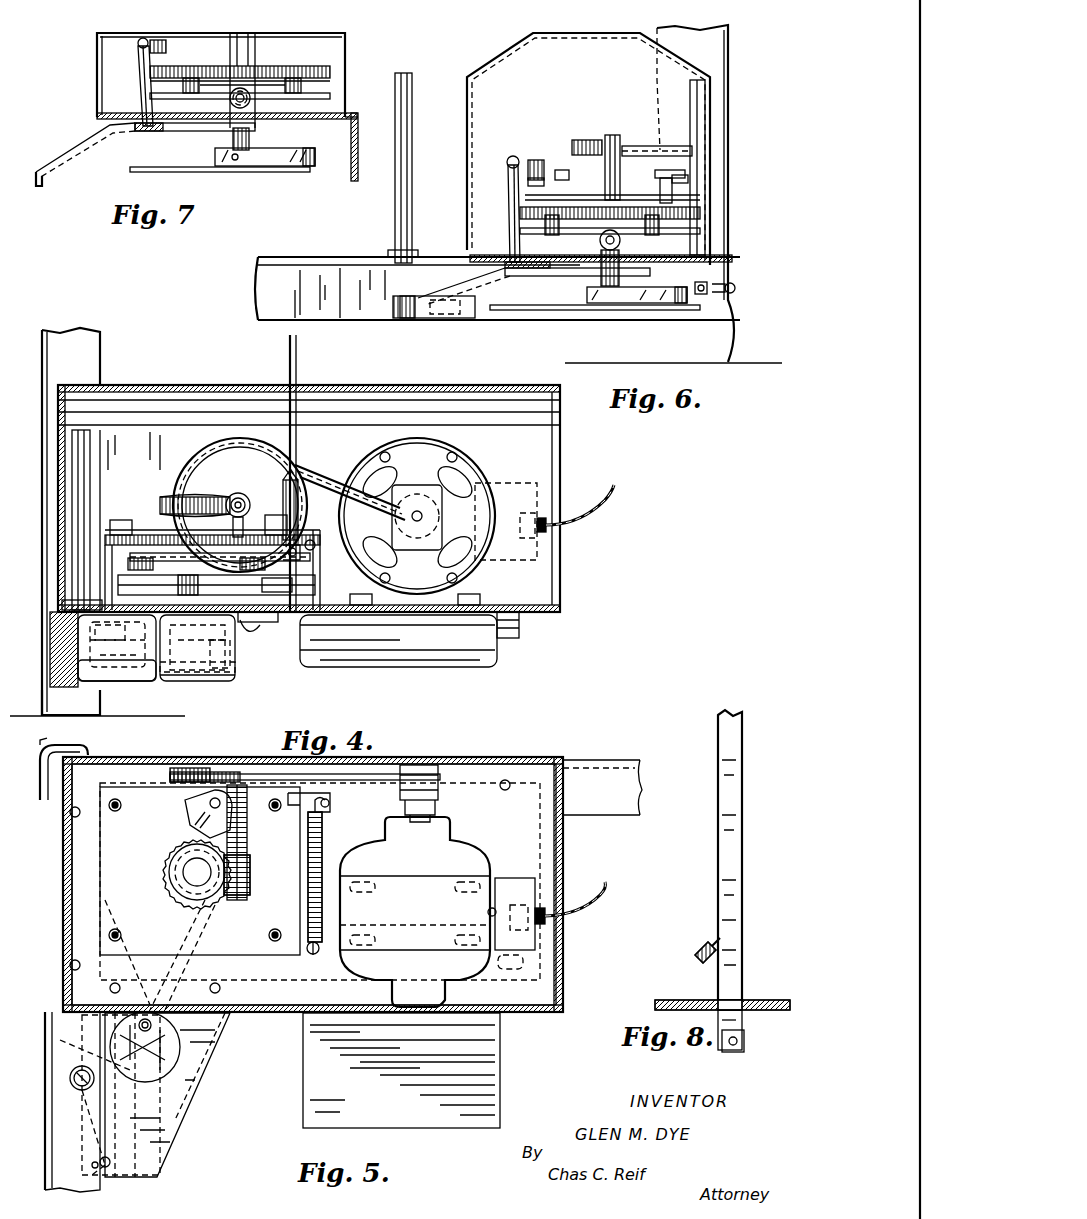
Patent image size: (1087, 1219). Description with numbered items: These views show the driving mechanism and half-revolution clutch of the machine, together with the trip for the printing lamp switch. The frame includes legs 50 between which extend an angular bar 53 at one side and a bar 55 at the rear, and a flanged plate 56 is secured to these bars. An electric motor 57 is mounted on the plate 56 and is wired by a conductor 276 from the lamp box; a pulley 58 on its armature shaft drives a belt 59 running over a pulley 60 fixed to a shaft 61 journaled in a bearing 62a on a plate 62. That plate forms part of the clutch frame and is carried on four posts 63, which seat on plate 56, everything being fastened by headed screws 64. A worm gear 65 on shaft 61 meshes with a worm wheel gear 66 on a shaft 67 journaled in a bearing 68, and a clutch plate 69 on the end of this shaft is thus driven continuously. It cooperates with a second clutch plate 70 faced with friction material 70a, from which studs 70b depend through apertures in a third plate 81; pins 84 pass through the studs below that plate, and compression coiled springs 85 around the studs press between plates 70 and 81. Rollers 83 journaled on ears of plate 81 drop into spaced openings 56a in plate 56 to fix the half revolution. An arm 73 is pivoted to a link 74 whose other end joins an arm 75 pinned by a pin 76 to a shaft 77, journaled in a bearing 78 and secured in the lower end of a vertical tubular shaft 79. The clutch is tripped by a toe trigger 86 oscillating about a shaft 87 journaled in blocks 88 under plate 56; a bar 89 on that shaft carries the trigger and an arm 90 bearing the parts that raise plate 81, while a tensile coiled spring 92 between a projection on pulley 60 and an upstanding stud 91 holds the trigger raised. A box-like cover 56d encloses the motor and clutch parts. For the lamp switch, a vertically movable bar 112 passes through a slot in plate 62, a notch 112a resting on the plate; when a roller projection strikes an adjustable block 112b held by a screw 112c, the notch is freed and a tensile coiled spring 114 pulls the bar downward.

In FIG. 6, the legs 50 is at (715, 50).
In FIG. 4, the legs 50 is at (98, 348).
In FIG. 5, the legs 50 is at (84, 752).
In FIG. 7, the bar 53 is at (355, 160).
In FIG. 6, the bar 53 is at (720, 265).
In FIG. 4, the bar 55 is at (50, 620).
In FIG. 5, the bar 55 is at (50, 1103).
In FIG. 4, the plate 56 is at (545, 612).
In FIG. 4, the spaced openings 56a is at (248, 657).
In FIG. 6, the box-like cover 56d is at (470, 112).
In FIG. 4, the box-like cover 56d is at (560, 440).
In FIG. 5, the box-like cover 56d is at (563, 838).
In FIG. 4, the electric motor 57 is at (455, 460).
In FIG. 5, the electric motor 57 is at (470, 862).
In FIG. 5, the pulley 58 is at (440, 792).
In FIG. 6, the belt 59 is at (700, 122).
In FIG. 4, the belt 59 is at (318, 472).
In FIG. 5, the belt 59 is at (385, 778).
In FIG. 6, the pulley 60 is at (706, 100).
In FIG. 4, the pulley 60 is at (192, 473).
In FIG. 5, the pulley 60 is at (190, 772).
In FIG. 5, the shaft 61 is at (250, 812).
In FIG. 5, the plate 62 is at (270, 950).
In FIG. 8, the plate 62 is at (668, 1004).
In FIG. 5, the bearing 62a is at (308, 801).
In FIG. 6, the posts 63 is at (744, 187).
In FIG. 4, the posts 63 is at (272, 515).
In FIG. 6, the headed screws 64 is at (744, 160).
In FIG. 5, the headed screws 64 is at (110, 810).
In FIG. 6, the worm gear 65 is at (614, 140).
In FIG. 4, the worm gear 65 is at (235, 493).
In FIG. 5, the worm gear 65 is at (238, 881).
In FIG. 6, the worm wheel gear 66 is at (580, 143).
In FIG. 4, the worm wheel gear 66 is at (165, 498).
In FIG. 5, the worm wheel gear 66 is at (175, 862).
In FIG. 4, the shaft 67 is at (186, 475).
In FIG. 5, the shaft 67 is at (185, 880).
In FIG. 4, the bearing 68 is at (216, 576).
In FIG. 7, the clutch plate 69 is at (298, 72).
In FIG. 6, the clutch plate 69 is at (580, 200).
In FIG. 4, the clutch plate 69 is at (158, 578).
In FIG. 5, the clutch plate 69 is at (195, 952).
In FIG. 7, the clutch plate 70 is at (335, 75).
In FIG. 6, the clutch plate 70 is at (703, 213).
In FIG. 4, the clutch plate 70 is at (280, 580).
In FIG. 7, the friction material 70a is at (332, 68).
In FIG. 4, the studs 70b is at (220, 580).
In FIG. 7, the arm 73 is at (315, 162).
In FIG. 6, the arm 73 is at (628, 303).
In FIG. 4, the arm 73 is at (211, 671).
In FIG. 5, the arm 73 is at (185, 806).
In FIG. 7, the link 74 is at (280, 175).
In FIG. 6, the link 74 is at (545, 310).
In FIG. 4, the link 74 is at (168, 681).
In FIG. 5, the link 74 is at (170, 1065).
In FIG. 6, the arm 75 is at (400, 318).
In FIG. 4, the arm 75 is at (100, 682).
In FIG. 5, the arm 75 is at (78, 1125).
In FIG. 5, the pin 76 is at (78, 1070).
In FIG. 5, the shaft 77 is at (70, 1078).
In FIG. 6, the bearing 78 is at (418, 256).
In FIG. 4, the bearing 78 is at (100, 453).
In FIG. 6, the tubular shaft 79 is at (412, 156).
In FIG. 4, the tubular shaft 79 is at (80, 533).
In FIG. 7, the third plate 81 is at (332, 95).
In FIG. 6, the third plate 81 is at (703, 232).
In FIG. 4, the third plate 81 is at (235, 591).
In FIG. 7, the rollers 83 is at (252, 106).
In FIG. 6, the rollers 83 is at (628, 255).
In FIG. 4, the rollers 83 is at (249, 660).
In FIG. 6, the pins 84 is at (588, 242).
In FIG. 7, the compression coiled springs 85 is at (192, 78).
In FIG. 6, the compression coiled springs 85 is at (650, 215).
In FIG. 4, the compression coiled springs 85 is at (196, 567).
In FIG. 7, the toe trigger 86 is at (48, 178).
In FIG. 6, the toe trigger 86 is at (428, 318).
In FIG. 4, the toe trigger 86 is at (436, 655).
In FIG. 5, the toe trigger 86 is at (490, 1040).
In FIG. 4, the shaft 87 is at (258, 620).
In FIG. 4, the blocks 88 is at (540, 650).
In FIG. 7, the bar 89 is at (118, 133).
In FIG. 6, the bar 89 is at (500, 277).
In FIG. 7, the arm 90 is at (185, 131).
In FIG. 6, the arm 90 is at (556, 277).
In FIG. 7, the stud 91 is at (140, 74).
In FIG. 6, the stud 91 is at (508, 198).
In FIG. 4, the stud 91 is at (302, 552).
In FIG. 5, the stud 91 is at (314, 955).
In FIG. 7, the tensile coiled spring 92 is at (158, 40).
In FIG. 6, the tensile coiled spring 92 is at (534, 162).
In FIG. 4, the tensile coiled spring 92 is at (312, 540).
In FIG. 5, the tensile coiled spring 92 is at (323, 826).
In FIG. 4, the bar 112 is at (297, 360).
In FIG. 8, the bar 112 is at (742, 738).
In FIG. 8, the notch 112a is at (740, 1002).
In FIG. 8, the block 112b is at (745, 1030).
In FIG. 8, the screw 112c is at (745, 1045).
In FIG. 8, the tensile coiled spring 114 is at (700, 950).
In FIG. 4, the conductor 276 is at (614, 485).
In FIG. 5, the conductor 276 is at (605, 882).